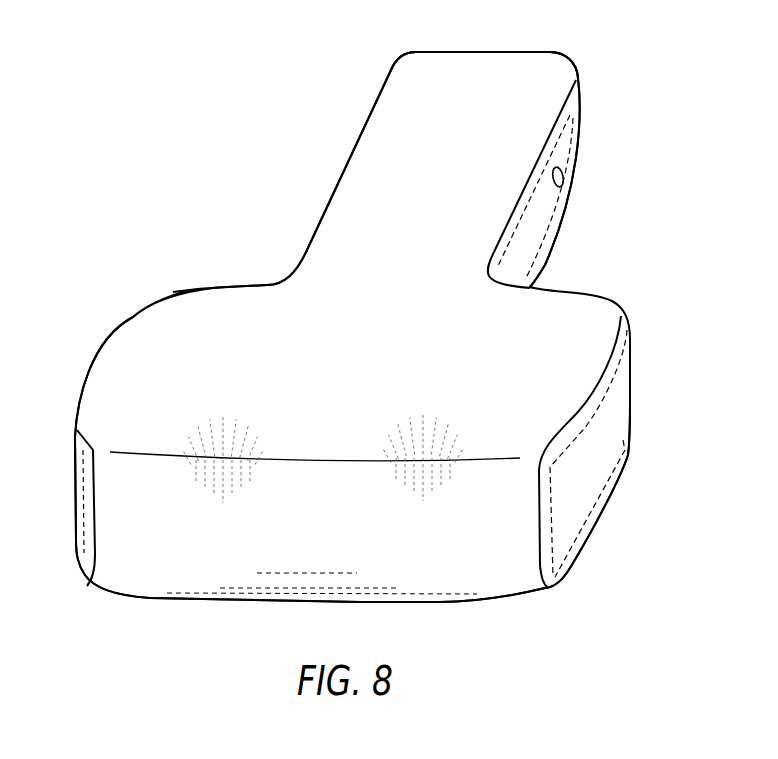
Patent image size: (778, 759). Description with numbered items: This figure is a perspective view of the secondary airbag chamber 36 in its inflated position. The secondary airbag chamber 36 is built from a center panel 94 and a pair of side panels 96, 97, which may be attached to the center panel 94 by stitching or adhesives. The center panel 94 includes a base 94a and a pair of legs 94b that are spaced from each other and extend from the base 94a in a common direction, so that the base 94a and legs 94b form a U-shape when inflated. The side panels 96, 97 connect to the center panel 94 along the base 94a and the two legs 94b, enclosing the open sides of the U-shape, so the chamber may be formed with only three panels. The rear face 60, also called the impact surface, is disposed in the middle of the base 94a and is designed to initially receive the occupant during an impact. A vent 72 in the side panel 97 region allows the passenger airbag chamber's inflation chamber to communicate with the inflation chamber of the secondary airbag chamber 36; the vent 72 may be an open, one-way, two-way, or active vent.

The secondary airbag chamber 36 is at (185, 134).
The center panel 94 is at (318, 305).
The base 94a is at (383, 123).
The legs 94b is at (198, 312).
The side panel 96 is at (117, 340).
The vent 72 is at (565, 175).
The side panel 97 is at (598, 463).
The rear face 60 is at (517, 545).